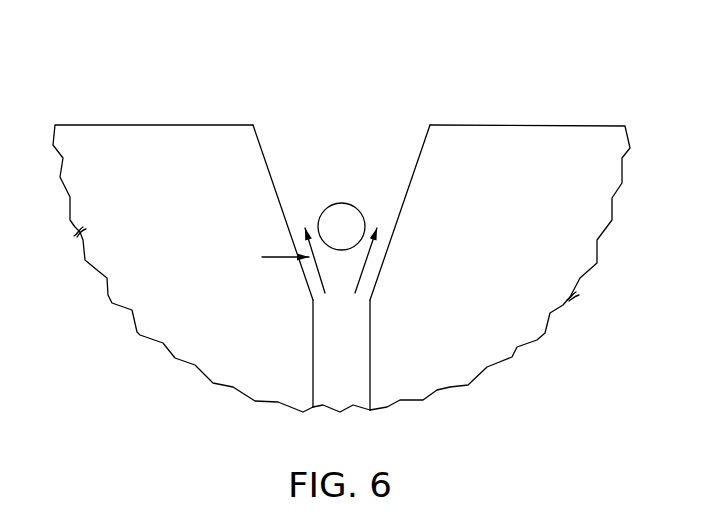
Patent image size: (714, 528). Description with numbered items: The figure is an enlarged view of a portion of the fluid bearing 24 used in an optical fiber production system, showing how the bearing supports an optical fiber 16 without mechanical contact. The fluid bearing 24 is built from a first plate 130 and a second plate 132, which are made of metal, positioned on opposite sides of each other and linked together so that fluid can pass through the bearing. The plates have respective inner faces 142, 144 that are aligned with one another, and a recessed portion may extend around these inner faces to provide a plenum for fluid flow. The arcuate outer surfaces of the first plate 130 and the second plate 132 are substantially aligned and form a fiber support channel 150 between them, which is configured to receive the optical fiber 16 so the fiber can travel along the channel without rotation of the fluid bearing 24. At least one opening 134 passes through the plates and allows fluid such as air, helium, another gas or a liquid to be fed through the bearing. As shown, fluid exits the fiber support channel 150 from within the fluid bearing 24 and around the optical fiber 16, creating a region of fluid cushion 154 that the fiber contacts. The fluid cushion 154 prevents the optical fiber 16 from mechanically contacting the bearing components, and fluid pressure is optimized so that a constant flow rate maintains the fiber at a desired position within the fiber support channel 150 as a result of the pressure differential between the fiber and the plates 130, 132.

The fluid bearing 24 is at (345, 223).
The optical fiber 16 is at (340, 203).
The first plate 130 is at (171, 268).
The second plate 132 is at (500, 267).
The opening 134 is at (313, 269).
The inner face of first plate 142 is at (262, 150).
The inner face of second plate 144 is at (421, 149).
The fiber support channel 150 is at (362, 164).
The fluid cushion 154 is at (253, 267).